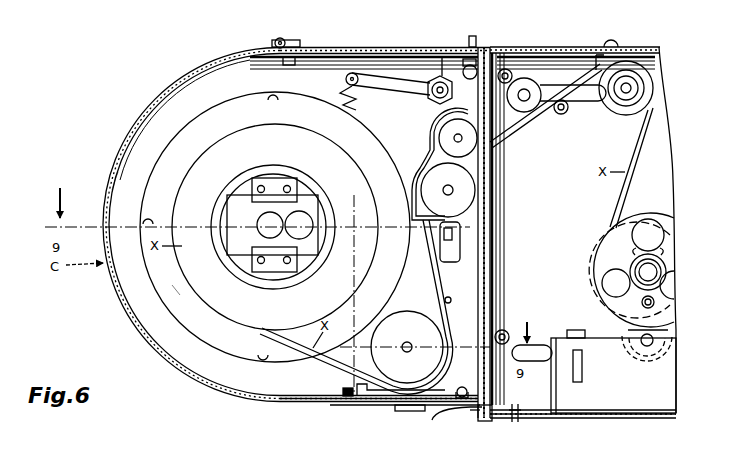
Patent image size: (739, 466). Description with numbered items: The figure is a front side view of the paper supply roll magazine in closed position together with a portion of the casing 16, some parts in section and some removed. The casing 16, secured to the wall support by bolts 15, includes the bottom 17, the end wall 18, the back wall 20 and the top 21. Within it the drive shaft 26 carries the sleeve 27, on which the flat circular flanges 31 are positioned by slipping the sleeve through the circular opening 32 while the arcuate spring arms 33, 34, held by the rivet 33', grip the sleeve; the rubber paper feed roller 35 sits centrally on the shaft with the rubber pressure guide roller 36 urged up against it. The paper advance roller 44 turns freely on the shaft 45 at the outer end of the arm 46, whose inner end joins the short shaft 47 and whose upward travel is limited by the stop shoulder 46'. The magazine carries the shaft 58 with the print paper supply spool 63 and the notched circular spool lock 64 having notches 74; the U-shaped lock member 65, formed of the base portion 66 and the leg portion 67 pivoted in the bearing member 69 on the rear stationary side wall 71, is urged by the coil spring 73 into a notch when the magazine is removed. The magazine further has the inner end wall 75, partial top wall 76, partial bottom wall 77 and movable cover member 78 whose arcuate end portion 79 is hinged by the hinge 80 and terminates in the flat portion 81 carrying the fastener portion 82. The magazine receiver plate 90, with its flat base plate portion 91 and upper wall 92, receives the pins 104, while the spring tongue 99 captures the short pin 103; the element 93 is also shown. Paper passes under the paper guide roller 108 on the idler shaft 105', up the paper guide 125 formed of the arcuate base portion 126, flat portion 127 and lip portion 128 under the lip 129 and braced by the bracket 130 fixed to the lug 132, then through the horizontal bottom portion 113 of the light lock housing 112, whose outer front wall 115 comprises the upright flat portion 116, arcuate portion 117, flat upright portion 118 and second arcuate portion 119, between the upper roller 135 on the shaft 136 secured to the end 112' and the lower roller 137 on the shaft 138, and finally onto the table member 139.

The bolts 15 is at (513, 76).
The casing 16 is at (662, 178).
The bottom 17 is at (632, 418).
The end wall 18 is at (500, 235).
The back wall 20 is at (662, 165).
The top 21 is at (640, 47).
The drive shaft 26 is at (655, 272).
The sleeve or flange support 27 is at (664, 259).
The flat circular flanges 31 is at (666, 225).
The circular opening 32 is at (664, 241).
The arcuate spring arm 33 is at (671, 275).
The rivet 33' is at (675, 304).
The arcuate spring arm 34 is at (628, 270).
The rubber paper feed roller 35 is at (648, 230).
The rubber pressure guide roller 36 is at (615, 336).
The paper advance roller 44 is at (650, 86).
The shaft 45 is at (630, 90).
The arm 46 is at (548, 85).
The stop shoulder 46' is at (622, 38).
The short shaft 47 is at (528, 102).
The shaft 58 is at (260, 233).
The print paper supply spool 63 is at (310, 190).
The circular spool lock 64 is at (176, 290).
The U-shaped lock member 65 is at (398, 78).
The base portion 66 is at (420, 92).
The leg portion 67 is at (441, 68).
The bearing member 69 is at (445, 98).
The rear stationary side wall 71 is at (452, 67).
The coil spring 73 is at (359, 98).
The notches 74 is at (150, 224).
The inner end wall 75 is at (498, 200).
The partial top wall 76 is at (381, 48).
The partial bottom wall 77 is at (460, 390).
The movable cover member 78 is at (103, 300).
The arcuate end portion 79 is at (108, 200).
The hinge 80 is at (286, 43).
The flat portion 81 is at (374, 407).
The fastener portion 82 is at (408, 412).
The magazine receiver plate 90 is at (494, 268).
The flat base plate portion 91 is at (497, 283).
The upper wall 92 is at (488, 47).
The bracket 93 is at (486, 422).
The spring tongue 99 is at (436, 424).
The short pin 103 is at (472, 414).
The pins 104 is at (473, 36).
The idler shaft 105' is at (398, 353).
The paper guide roller 108 is at (432, 329).
The light lock housing 112 is at (414, 153).
The end 112' is at (518, 164).
The horizontal bottom portion 113 is at (448, 242).
The outer front wall 115 is at (412, 188).
The upright flat portion 116 is at (415, 205).
The arcuate portion 117 is at (418, 164).
The flat upright portion 118 is at (428, 139).
The second arcuate portion 119 is at (434, 126).
The paper guide 125 is at (498, 305).
The arcuate base portion 126 is at (455, 345).
The flat portion 127 is at (446, 296).
The lip portion 128 is at (352, 402).
The lip 129 is at (357, 386).
The bracket 130 is at (500, 255).
The lug 132 is at (500, 220).
The upper roller 135 is at (497, 152).
The shaft 136 is at (458, 138).
The lower roller 137 is at (458, 204).
The shaft 138 is at (448, 190).
The table member 139 is at (660, 378).